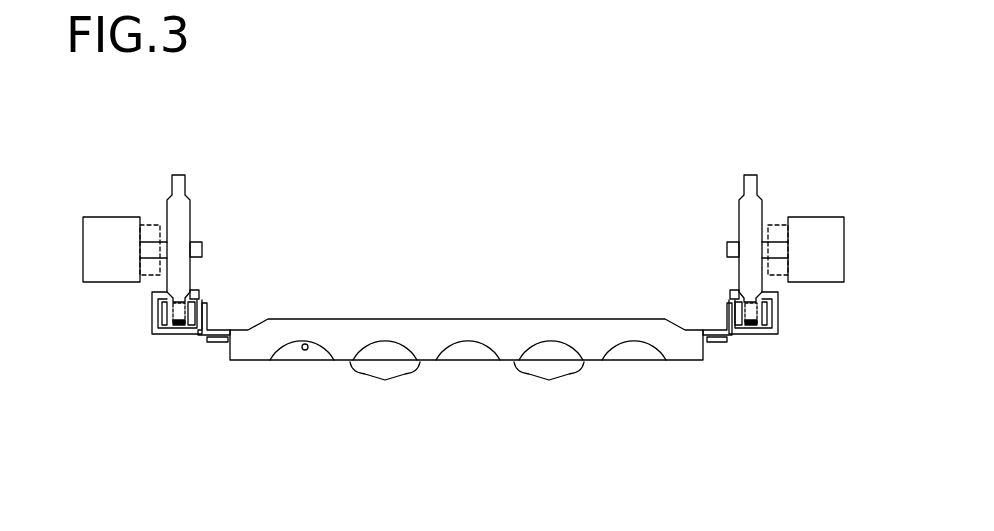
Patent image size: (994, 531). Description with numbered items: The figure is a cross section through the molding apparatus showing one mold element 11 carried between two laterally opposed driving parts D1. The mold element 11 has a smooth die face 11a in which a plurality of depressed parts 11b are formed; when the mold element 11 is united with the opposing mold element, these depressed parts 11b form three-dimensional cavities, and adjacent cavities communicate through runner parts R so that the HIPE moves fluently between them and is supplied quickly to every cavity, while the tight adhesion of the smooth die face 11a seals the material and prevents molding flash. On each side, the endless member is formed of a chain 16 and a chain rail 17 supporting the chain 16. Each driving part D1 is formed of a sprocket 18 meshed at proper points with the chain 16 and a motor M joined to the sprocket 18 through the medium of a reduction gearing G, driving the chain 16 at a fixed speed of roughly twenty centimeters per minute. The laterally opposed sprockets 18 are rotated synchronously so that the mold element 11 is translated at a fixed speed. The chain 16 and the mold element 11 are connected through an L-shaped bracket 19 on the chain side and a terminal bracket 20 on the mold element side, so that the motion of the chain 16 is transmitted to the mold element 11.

The mold element 11 is at (457, 300).
The smooth die face 11a is at (257, 362).
The depressed part 11b is at (308, 345).
The runner part R is at (467, 384).
The chain 16 is at (163, 335).
The chain rail 17 is at (150, 310).
The sprocket 18 is at (178, 217).
The L-shaped bracket 19 is at (204, 315).
The terminal bracket 20 is at (214, 343).
The motor M is at (463, 249).
The reduction gearing G is at (160, 227).
The driving part D1 is at (815, 158).